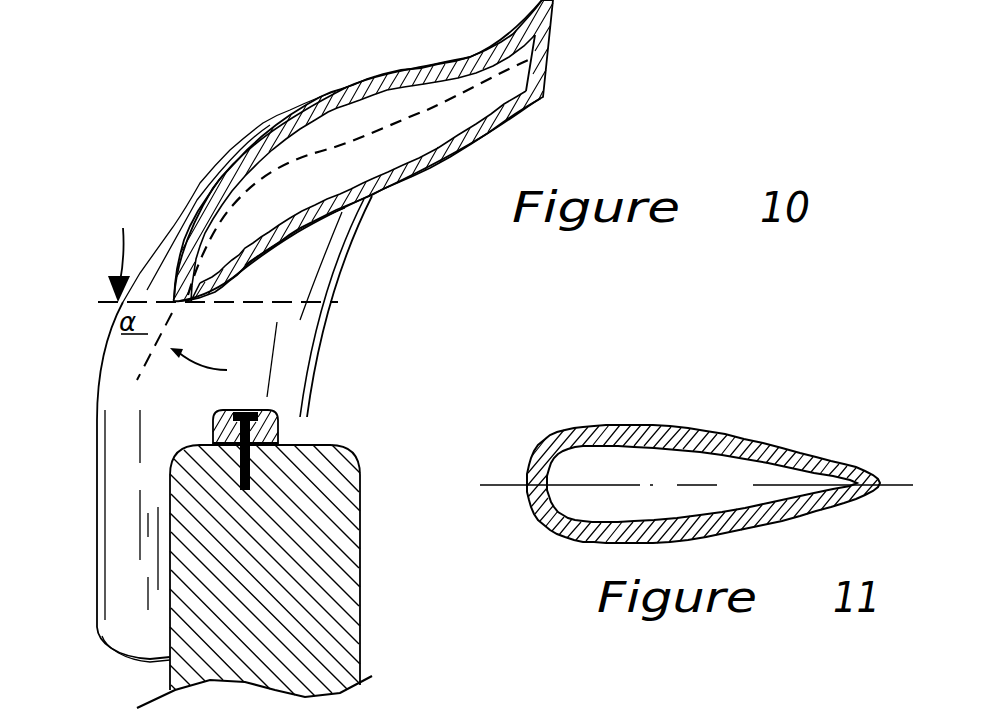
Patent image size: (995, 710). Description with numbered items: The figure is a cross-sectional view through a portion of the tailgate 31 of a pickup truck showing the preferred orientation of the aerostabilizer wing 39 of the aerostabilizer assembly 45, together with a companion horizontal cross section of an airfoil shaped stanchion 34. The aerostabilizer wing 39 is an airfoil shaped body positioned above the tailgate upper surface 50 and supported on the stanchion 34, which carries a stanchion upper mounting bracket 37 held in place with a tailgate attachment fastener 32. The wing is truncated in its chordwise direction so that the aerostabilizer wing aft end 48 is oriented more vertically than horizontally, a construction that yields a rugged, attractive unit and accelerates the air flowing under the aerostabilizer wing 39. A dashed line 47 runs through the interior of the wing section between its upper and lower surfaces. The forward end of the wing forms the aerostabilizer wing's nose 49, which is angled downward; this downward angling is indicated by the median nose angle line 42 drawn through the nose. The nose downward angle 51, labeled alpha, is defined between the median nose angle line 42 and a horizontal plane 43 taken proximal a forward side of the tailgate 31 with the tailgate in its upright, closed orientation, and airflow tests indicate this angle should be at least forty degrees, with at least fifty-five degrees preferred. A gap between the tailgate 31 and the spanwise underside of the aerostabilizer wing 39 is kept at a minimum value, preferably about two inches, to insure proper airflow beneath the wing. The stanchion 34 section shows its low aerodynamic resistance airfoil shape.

In FIG. 10, the tailgate 31 is at (360, 623).
In FIG. 10, the tailgate attachment fasteners 32 is at (252, 472).
In FIG. 10, the stanchion 34 is at (318, 246).
In FIG. 11, the stanchion 34 is at (712, 431).
In FIG. 10, the stanchion upper mounting bracket 37 is at (267, 410).
In FIG. 10, the aerostabilizer wing 39 is at (347, 87).
In FIG. 10, the median nose angle line 42 is at (140, 368).
In FIG. 10, the horizontal plane 43 is at (310, 352).
In FIG. 10, the aerostabilizer assembly 45 is at (478, 142).
In FIG. 10, the camber line 47 is at (325, 150).
In FIG. 10, the aerostabilizer wing aft end 48 is at (543, 98).
In FIG. 10, the aerostabilizer wing nose 49 is at (133, 292).
In FIG. 10, the tailgate upper surface 50 is at (215, 443).
In FIG. 10, the nose downward angle 51 is at (108, 330).